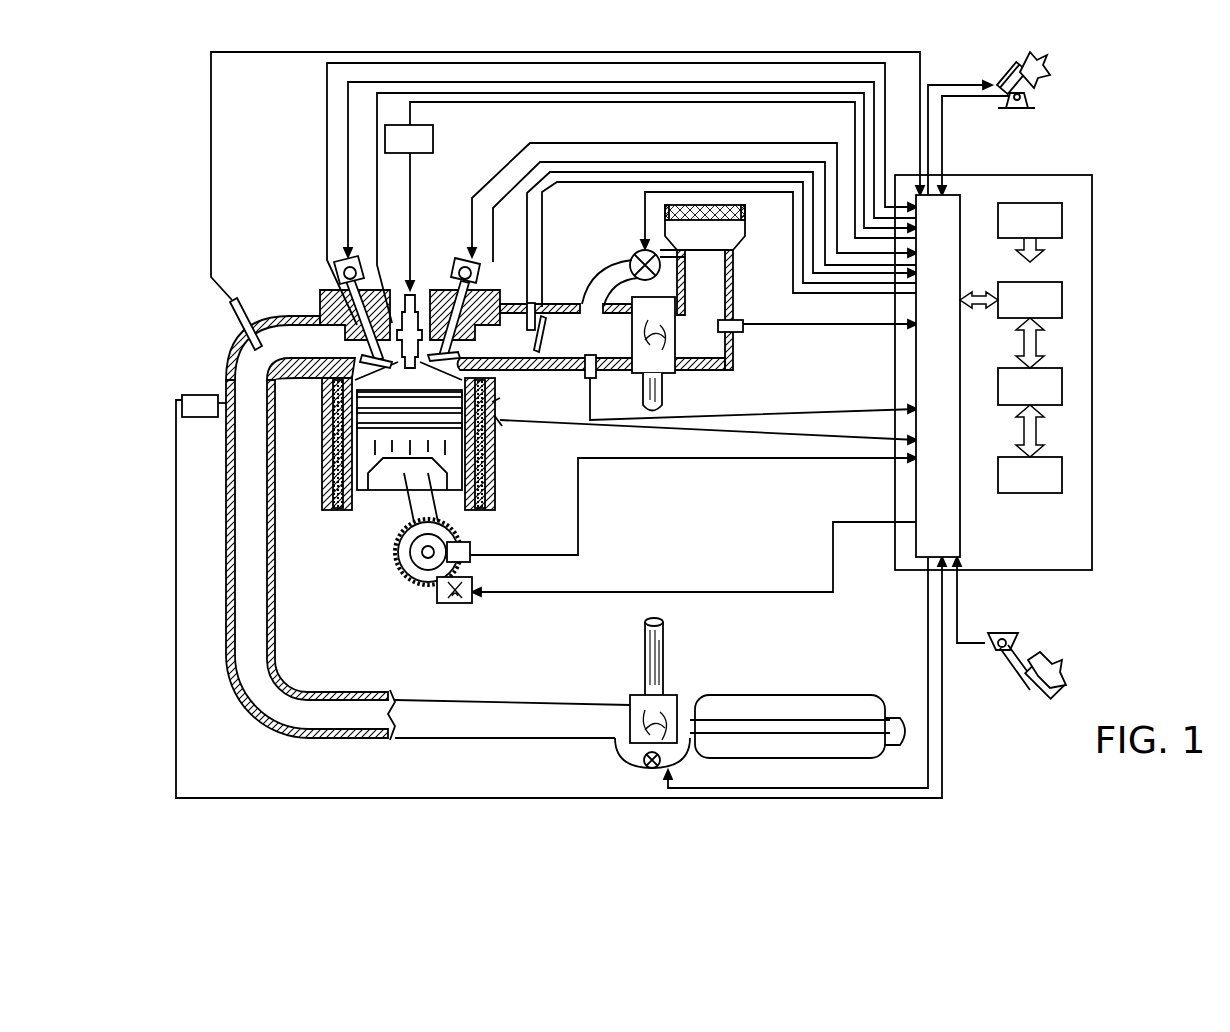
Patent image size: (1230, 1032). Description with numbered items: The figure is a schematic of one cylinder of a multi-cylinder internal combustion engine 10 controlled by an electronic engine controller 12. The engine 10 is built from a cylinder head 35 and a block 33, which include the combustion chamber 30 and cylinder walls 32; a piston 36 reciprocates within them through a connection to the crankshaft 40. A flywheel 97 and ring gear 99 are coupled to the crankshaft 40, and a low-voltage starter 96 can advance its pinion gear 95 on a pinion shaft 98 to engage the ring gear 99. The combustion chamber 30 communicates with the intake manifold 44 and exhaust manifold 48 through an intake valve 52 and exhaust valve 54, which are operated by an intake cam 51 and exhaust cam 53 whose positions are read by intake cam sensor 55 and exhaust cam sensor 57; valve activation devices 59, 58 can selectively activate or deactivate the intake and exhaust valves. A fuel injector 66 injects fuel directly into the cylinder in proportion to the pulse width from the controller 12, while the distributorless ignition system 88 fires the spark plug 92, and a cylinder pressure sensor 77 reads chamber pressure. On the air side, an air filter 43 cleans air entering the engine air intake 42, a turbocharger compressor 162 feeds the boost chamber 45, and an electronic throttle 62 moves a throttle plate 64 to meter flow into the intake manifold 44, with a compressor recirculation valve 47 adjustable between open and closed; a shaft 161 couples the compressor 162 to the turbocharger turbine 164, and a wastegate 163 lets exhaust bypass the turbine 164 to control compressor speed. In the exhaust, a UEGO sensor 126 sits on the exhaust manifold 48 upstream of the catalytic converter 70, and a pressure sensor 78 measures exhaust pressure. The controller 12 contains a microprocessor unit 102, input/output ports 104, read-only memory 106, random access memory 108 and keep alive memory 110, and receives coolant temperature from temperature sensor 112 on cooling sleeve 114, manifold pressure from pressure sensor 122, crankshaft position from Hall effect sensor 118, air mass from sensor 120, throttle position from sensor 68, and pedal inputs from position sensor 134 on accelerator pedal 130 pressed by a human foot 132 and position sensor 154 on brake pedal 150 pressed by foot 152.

The internal combustion engine 10 is at (297, 248).
The electronic engine controller 12 is at (1092, 178).
The combustion chamber 30 is at (352, 468).
The cylinder walls 32 is at (356, 505).
The block 33 is at (320, 411).
The cylinder head 35 is at (312, 295).
The piston 36 is at (398, 470).
The crankshaft 40 is at (412, 572).
The engine air intake 42 is at (592, 227).
The air filter 43 is at (713, 217).
The intake manifold 44 is at (592, 337).
The boost chamber 45 is at (598, 338).
The compressor recirculation valve 47 is at (638, 252).
The exhaust manifold 48 is at (428, 528).
The intake cam 51 is at (466, 256).
The intake valve 52 is at (449, 344).
The exhaust cam 53 is at (352, 262).
The exhaust valve 54 is at (322, 330).
The intake cam sensor 55 is at (482, 286).
The exhaust cam sensor 57 is at (340, 270).
The valve activation device 58 is at (343, 275).
The valve activation device 59 is at (462, 282).
The electronic throttle 62 is at (547, 333).
The throttle plate 64 is at (546, 346).
The fuel injector 66 is at (498, 398).
The throttle position sensor 68 is at (498, 310).
The catalytic converter 70 is at (735, 697).
The cylinder pressure sensor 77 is at (403, 302).
The pressure sensor 78 is at (248, 330).
The distributorless ignition system 88 is at (409, 139).
The spark plug 92 is at (416, 295).
The pinion gear 95 is at (457, 603).
The starter 96 is at (468, 602).
The flywheel 97 is at (402, 560).
The pinion shaft 98 is at (445, 602).
The ring gear 99 is at (438, 595).
The microprocessor unit 102 is at (1062, 300).
The input/output ports 104 is at (960, 200).
The read-only memory 106 is at (1062, 217).
The random access memory 108 is at (1062, 389).
The keep alive memory 110 is at (1062, 477).
The temperature sensor 112 is at (520, 431).
The cooling sleeve 114 is at (505, 468).
The Hall effect sensor 118 is at (468, 545).
The air mass sensor 120 is at (743, 320).
The pressure sensor 122 is at (585, 368).
The Universal Exhaust Gas Oxygen sensor 126 is at (182, 400).
The accelerator pedal 130 is at (1000, 80).
The human foot 132 is at (1050, 64).
The position sensor 134 is at (1030, 98).
The brake pedal 150 is at (1022, 684).
The foot 152 is at (1050, 660).
The position sensor 154 is at (992, 638).
The shaft 161 is at (643, 392).
The turbocharger compressor 162 is at (666, 355).
The wastegate 163 is at (646, 765).
The turbocharger turbine 164 is at (632, 697).